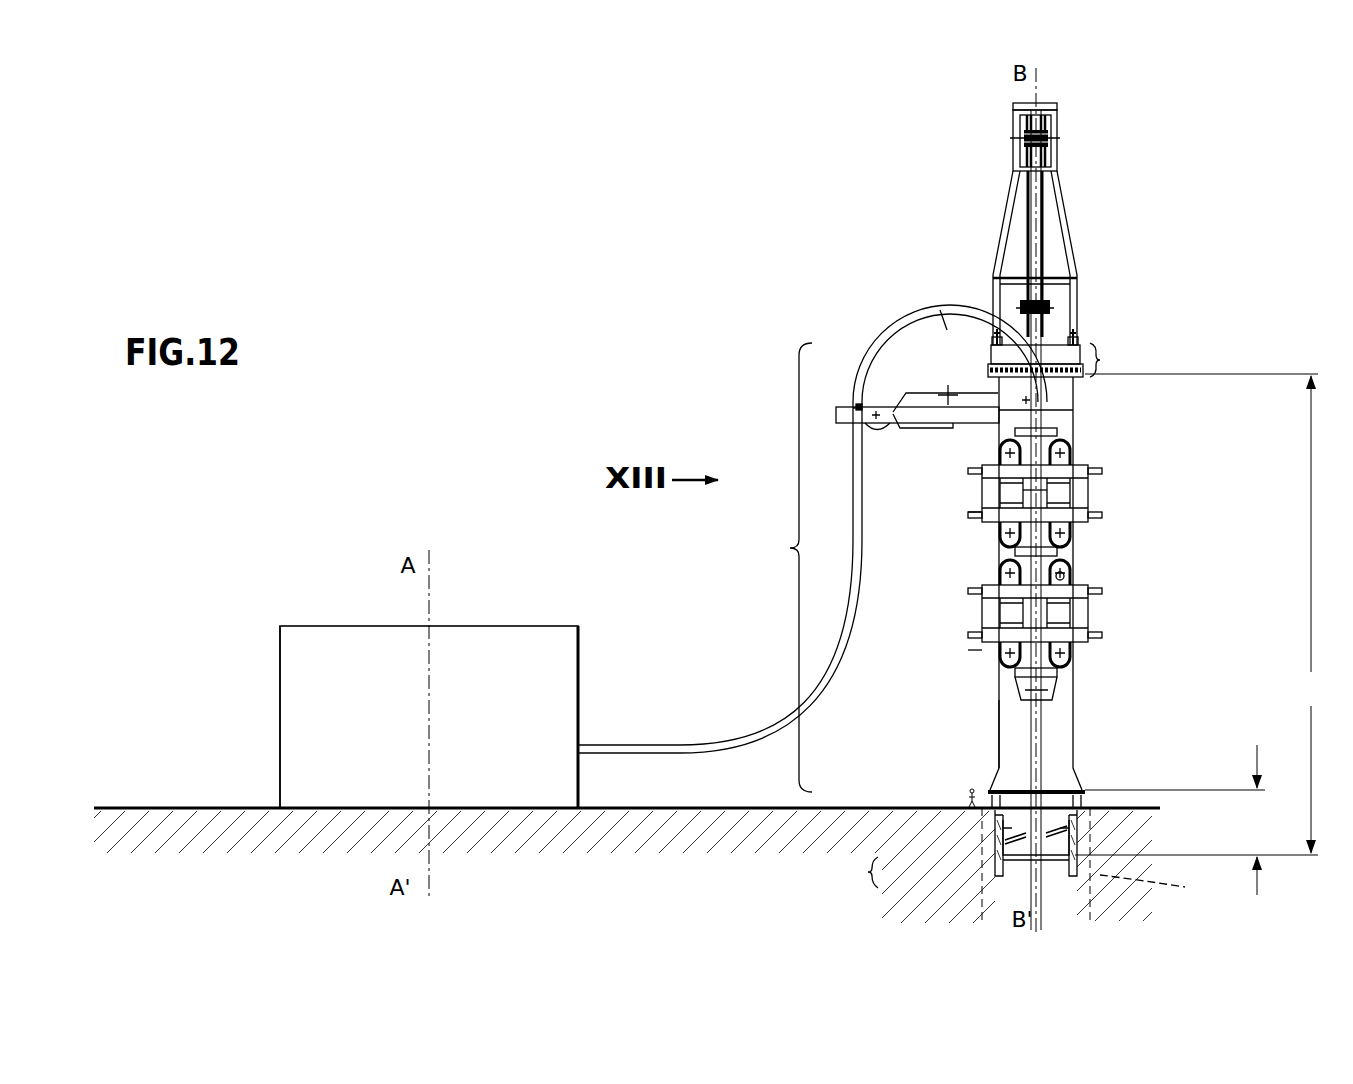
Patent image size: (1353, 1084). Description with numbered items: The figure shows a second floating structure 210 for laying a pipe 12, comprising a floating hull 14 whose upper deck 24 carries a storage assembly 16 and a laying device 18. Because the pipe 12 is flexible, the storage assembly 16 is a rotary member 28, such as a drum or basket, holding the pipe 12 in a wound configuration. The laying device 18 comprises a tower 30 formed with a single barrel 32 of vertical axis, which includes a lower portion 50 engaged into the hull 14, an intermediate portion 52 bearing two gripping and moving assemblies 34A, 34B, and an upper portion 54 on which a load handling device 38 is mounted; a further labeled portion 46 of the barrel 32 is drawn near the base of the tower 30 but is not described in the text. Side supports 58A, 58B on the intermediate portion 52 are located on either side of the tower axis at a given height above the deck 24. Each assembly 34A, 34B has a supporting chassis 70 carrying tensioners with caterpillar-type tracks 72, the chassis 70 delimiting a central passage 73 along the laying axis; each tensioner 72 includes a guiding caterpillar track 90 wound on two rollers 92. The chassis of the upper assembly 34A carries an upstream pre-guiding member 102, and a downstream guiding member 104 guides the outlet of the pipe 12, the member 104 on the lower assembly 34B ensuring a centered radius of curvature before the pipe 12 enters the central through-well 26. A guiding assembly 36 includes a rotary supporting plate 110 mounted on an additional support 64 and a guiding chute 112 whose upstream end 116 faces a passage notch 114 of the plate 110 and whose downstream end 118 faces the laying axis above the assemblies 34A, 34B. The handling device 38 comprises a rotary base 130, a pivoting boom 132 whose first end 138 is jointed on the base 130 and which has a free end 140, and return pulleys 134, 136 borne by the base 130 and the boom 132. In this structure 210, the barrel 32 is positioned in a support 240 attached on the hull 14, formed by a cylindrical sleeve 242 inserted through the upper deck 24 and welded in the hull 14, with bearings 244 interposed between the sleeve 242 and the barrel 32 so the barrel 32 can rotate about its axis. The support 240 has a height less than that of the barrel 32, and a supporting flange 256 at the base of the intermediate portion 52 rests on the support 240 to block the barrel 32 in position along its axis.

The second floating structure 210 is at (372, 343).
The pipe 12 is at (865, 605).
The floating hull 14 is at (832, 832).
The storage assembly 16 is at (325, 615).
The laying device 18 is at (1190, 272).
The upper deck 24 is at (732, 806).
The central through-well 26 is at (1158, 876).
The rotary member 28 is at (280, 693).
The tower 30 is at (1092, 440).
The barrel 32 is at (1080, 745).
The first gripping and moving assembly 34A is at (1098, 495).
The second gripping and moving assembly 34B is at (1098, 610).
The guiding assembly 36 is at (858, 325).
The load handling device 38 is at (1092, 225).
The riser lower section 46 is at (1003, 763).
The lower portion of the barrel 50 is at (1034, 866).
The intermediate portion of the barrel 52 is at (785, 567).
The upper portion of the barrel 54 is at (1083, 314).
The first side support 58A is at (962, 512).
The second side support 58B is at (980, 650).
The additional support 64 is at (1010, 428).
The supporting chassis 70 is at (1063, 525).
The tensioner with caterpillar-type tracks 72 is at (1063, 448).
The central passage 73 is at (1048, 488).
The guiding caterpillar track 90 is at (1050, 672).
The rollers 92 is at (1063, 580).
The upstream pre-guiding member 102 is at (1020, 405).
The downstream guiding member 104 is at (1020, 550).
The rotary supporting plate 110 is at (912, 425).
The guiding chute 112 is at (932, 328).
The upstream passage notch 114 is at (836, 418).
The upstream end of the chute 116 is at (862, 408).
The downstream end of the chute 118 is at (1048, 405).
The rotary base 130 is at (1057, 345).
The pivoting boom 132 is at (1056, 182).
The return pulley 134 is at (1022, 290).
The return pulley 136 is at (1025, 130).
The first end of the boom 138 is at (1065, 340).
The free end of the boom 140 is at (1048, 101).
The support 240 is at (988, 862).
The cylindrical sleeve 242 is at (995, 840).
The bearings 244 is at (1080, 848).
The supporting flange 256 is at (1080, 790).